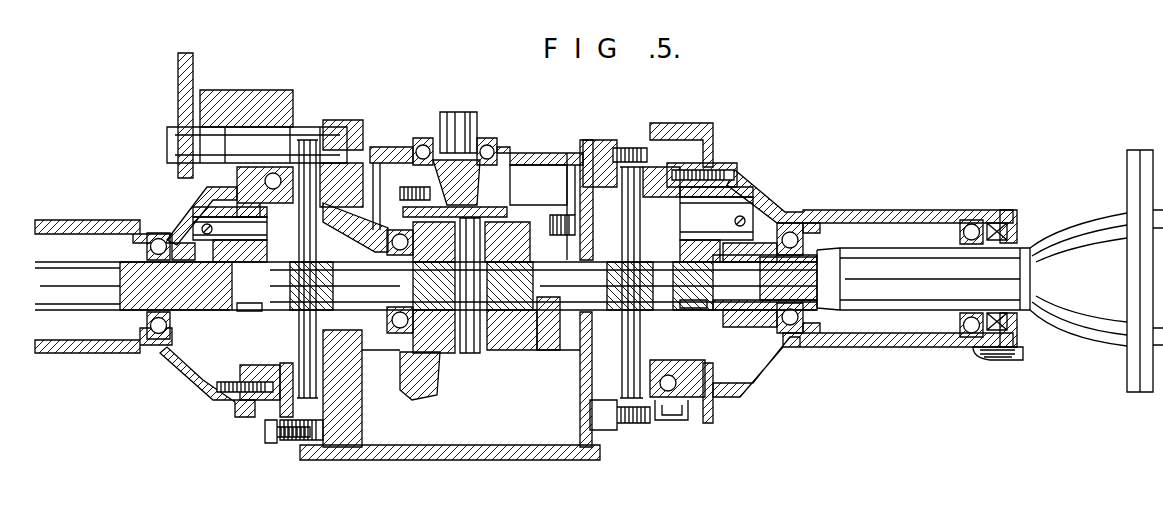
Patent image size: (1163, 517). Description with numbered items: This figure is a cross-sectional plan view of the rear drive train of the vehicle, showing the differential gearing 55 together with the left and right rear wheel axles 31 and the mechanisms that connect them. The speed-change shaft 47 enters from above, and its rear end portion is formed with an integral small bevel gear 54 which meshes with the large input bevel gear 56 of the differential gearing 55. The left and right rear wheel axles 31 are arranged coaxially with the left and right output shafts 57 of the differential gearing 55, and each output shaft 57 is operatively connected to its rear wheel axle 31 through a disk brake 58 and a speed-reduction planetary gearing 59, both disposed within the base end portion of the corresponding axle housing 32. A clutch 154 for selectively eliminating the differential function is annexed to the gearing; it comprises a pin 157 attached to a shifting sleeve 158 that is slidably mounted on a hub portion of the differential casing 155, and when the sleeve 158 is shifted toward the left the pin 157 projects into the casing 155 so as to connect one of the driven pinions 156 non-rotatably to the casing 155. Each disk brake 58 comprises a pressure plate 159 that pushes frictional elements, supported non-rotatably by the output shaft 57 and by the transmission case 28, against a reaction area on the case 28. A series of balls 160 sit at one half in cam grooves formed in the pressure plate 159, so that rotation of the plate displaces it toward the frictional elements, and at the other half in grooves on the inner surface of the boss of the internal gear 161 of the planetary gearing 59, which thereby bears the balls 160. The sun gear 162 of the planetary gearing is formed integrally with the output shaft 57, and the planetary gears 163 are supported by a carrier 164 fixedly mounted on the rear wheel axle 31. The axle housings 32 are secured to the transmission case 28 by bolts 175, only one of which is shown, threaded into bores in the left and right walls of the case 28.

The transmission case 28 is at (612, 147).
The rear wheel axle 31 is at (110, 295).
The axle housing 32 is at (185, 378).
The speed-change shaft 47 is at (450, 140).
The bevel gear 54 is at (480, 190).
The differential gearing 55 is at (504, 365).
The input bevel gear 56 is at (430, 395).
The output shaft 57 is at (363, 290).
The disk brake 58 is at (268, 432).
The speed-reduction planetary gearing 59 is at (196, 196).
The clutch 154 is at (544, 198).
The differential casing 155 is at (450, 348).
The driven pinion 156 is at (510, 253).
The pin 157 is at (557, 227).
The shifting sleeve 158 is at (560, 330).
The pressure plate 159 is at (297, 165).
The ball 160 is at (273, 172).
The internal gear 161 is at (255, 367).
The sun gear 162 is at (250, 312).
The planetary gear 163 is at (303, 205).
The carrier 164 is at (195, 215).
The bolt 175 is at (294, 442).